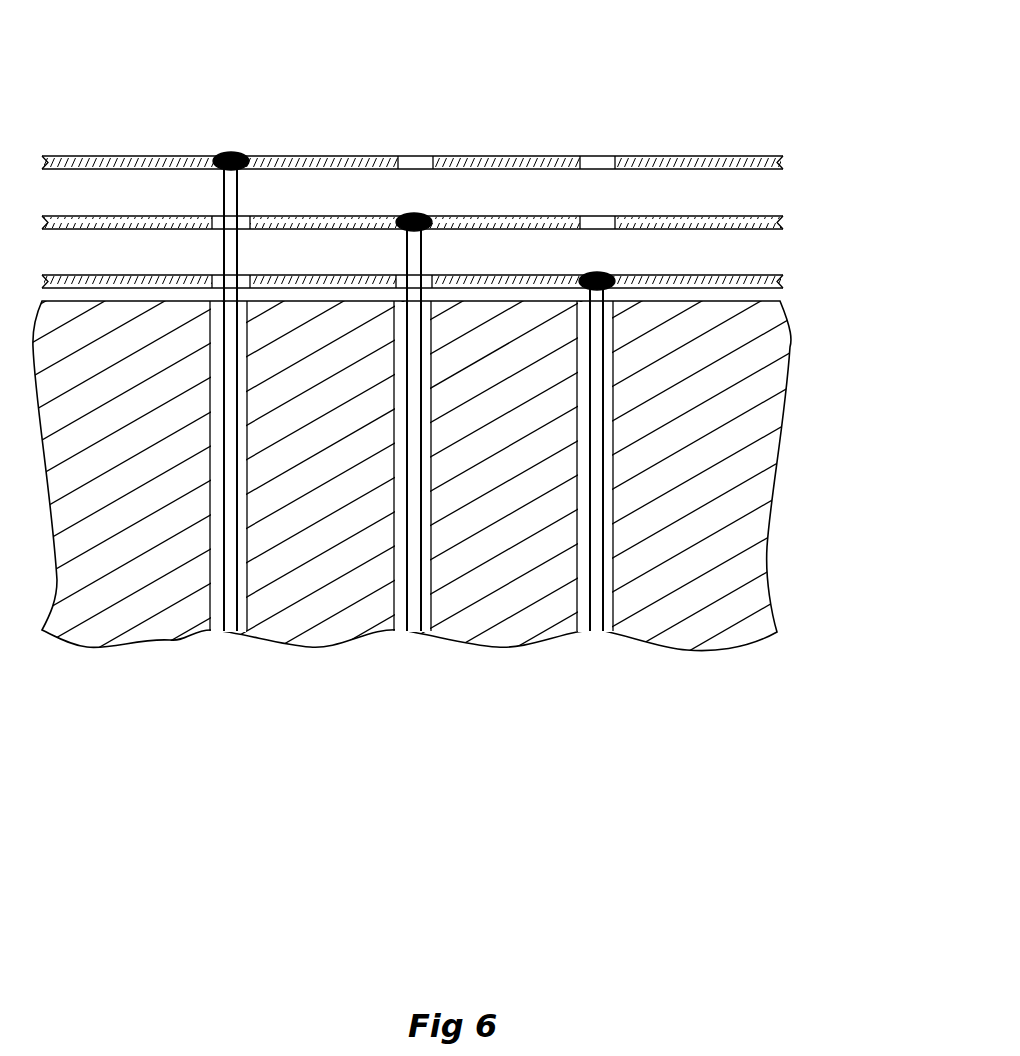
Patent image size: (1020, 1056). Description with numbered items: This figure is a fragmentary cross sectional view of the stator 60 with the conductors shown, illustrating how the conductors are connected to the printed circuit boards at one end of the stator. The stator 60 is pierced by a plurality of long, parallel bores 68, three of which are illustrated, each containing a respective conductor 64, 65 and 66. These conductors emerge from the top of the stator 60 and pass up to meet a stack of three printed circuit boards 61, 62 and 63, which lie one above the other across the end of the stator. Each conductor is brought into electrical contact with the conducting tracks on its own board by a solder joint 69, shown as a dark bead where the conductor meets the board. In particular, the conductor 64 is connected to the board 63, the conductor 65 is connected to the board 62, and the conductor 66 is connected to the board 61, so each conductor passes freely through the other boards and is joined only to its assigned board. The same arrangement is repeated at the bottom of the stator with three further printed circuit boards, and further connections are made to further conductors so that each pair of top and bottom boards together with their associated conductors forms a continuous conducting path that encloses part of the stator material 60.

The stator 60 is at (772, 393).
The printed circuit board 61 is at (783, 162).
The printed circuit board 62 is at (783, 222).
The printed circuit board 63 is at (783, 284).
The conductor 64 is at (593, 623).
The conductor 65 is at (410, 628).
The conductor 66 is at (230, 628).
The bores 68 is at (248, 618).
The solder joints 69 is at (237, 152).